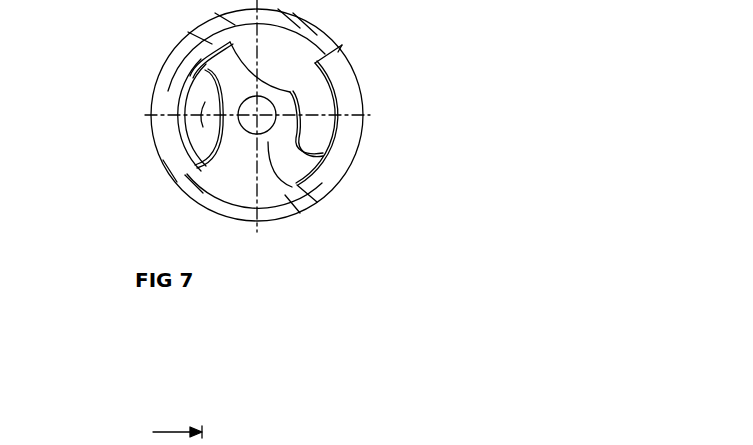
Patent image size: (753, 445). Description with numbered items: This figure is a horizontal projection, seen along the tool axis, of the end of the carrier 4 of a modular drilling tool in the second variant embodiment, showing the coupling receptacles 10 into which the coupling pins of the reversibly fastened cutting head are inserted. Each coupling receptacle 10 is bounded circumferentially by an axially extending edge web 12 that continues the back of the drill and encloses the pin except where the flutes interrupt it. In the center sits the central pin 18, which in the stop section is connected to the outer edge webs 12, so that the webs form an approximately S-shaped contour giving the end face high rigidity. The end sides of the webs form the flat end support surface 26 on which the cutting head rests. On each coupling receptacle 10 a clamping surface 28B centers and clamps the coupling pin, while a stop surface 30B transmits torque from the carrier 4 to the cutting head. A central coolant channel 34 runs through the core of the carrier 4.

The carrier 4 is at (420, 67).
The coupling receptacle 10 is at (195, 142).
The edge web 12 is at (355, 100).
The central pin 18 is at (268, 142).
The end support surface 26 is at (340, 167).
The clamping surface 28B is at (333, 142).
The stop surface 30B is at (212, 86).
The central coolant channel 34 is at (252, 125).